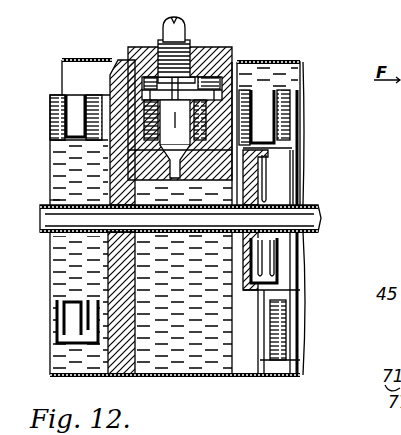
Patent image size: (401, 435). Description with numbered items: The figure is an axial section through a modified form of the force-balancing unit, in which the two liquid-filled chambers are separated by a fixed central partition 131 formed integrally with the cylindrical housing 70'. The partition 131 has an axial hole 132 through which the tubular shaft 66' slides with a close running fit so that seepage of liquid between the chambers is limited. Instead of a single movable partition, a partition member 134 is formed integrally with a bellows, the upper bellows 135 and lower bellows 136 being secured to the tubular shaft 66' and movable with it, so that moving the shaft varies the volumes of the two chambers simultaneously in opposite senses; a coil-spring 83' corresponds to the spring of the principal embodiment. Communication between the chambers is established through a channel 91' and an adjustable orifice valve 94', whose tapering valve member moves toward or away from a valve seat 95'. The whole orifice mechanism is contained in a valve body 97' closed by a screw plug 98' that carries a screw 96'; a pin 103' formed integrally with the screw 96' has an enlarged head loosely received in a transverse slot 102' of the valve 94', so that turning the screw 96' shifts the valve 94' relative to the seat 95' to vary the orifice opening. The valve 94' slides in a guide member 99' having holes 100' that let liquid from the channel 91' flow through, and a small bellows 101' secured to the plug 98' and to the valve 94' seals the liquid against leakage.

The channel 91' is at (63, 217).
The upper bellows 135 is at (58, 92).
The transverse slot 102' is at (65, 73).
The valve seat 95' is at (60, 160).
The axial hole 132 is at (53, 203).
The bellows 101' is at (110, 121).
The screw plug 98' is at (198, 97).
The pin 103' is at (161, 45).
The screw 96' is at (198, 28).
The valve body 97' is at (268, 118).
The adjustable orifice valve 94' is at (312, 205).
The lower bellows 136 is at (296, 125).
The holes 100' is at (299, 220).
The guide member 99' is at (306, 173).
The tubular shaft 66' is at (208, 218).
The coil-spring 83' is at (299, 267).
The cylindrical housing 70' is at (281, 325).
The central partition 131 is at (130, 347).
The partition member 134 is at (228, 270).